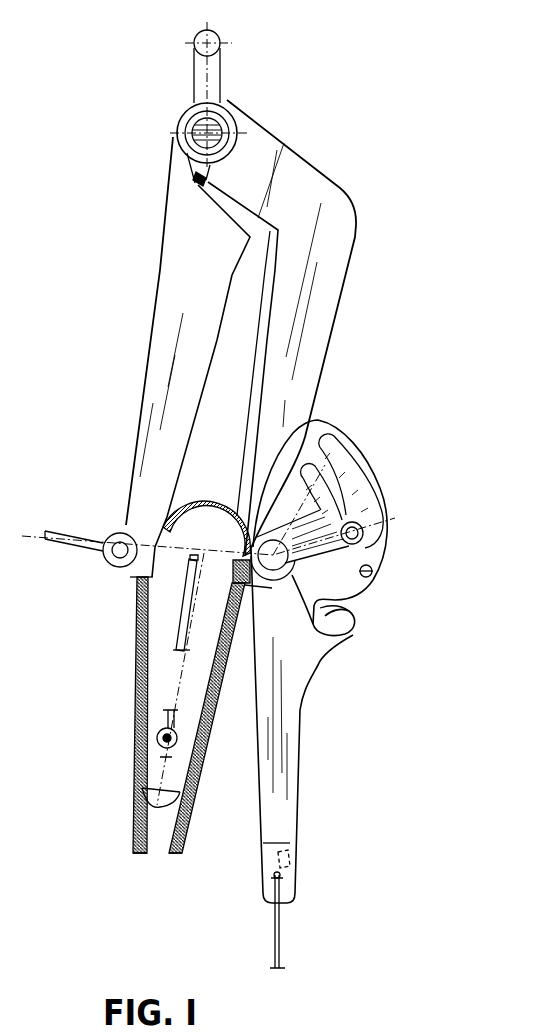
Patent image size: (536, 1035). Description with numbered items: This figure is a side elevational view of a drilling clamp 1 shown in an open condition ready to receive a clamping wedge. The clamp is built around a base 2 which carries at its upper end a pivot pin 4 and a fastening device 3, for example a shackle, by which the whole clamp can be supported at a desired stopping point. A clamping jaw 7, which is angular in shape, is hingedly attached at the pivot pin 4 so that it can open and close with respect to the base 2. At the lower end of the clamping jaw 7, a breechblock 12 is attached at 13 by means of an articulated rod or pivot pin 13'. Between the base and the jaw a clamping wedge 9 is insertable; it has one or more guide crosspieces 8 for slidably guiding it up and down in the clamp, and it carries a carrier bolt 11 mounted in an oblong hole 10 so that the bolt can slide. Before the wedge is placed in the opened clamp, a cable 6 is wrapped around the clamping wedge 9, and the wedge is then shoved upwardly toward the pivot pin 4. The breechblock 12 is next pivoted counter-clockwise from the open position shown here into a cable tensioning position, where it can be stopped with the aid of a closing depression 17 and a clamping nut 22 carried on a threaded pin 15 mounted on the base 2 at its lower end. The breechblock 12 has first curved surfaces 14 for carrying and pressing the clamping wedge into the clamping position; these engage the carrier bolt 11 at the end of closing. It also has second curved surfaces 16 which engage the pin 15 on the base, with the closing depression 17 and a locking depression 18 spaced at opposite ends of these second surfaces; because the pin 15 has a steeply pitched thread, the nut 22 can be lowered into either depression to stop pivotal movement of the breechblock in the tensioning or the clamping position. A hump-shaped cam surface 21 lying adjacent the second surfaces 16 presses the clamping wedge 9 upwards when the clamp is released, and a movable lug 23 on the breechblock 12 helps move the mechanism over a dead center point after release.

The drilling clamp 1 is at (307, 143).
The base 2 is at (167, 347).
The fastening device 3 is at (218, 62).
The pivot pin 4 is at (197, 123).
The cable 6 is at (168, 860).
The clamping jaw 7 is at (308, 343).
The guide crosspiece 8 is at (183, 613).
The clamping wedge 9 is at (160, 680).
The oblong hole 10 is at (163, 720).
The carrier bolt 11 is at (150, 757).
The breechblock 12 is at (295, 770).
The attachment point 13 is at (319, 508).
The articulated rod or pivot pin 13' is at (370, 636).
The first curved surfaces 14 is at (343, 620).
The threaded pin 15 is at (102, 538).
The second curved surfaces 16 is at (343, 500).
The closing depression 17 is at (347, 462).
The locking depression 18 is at (363, 537).
The hump-shaped cam surface 21 is at (373, 590).
The clamping nut 22 is at (46, 543).
The movable lug 23 is at (280, 943).